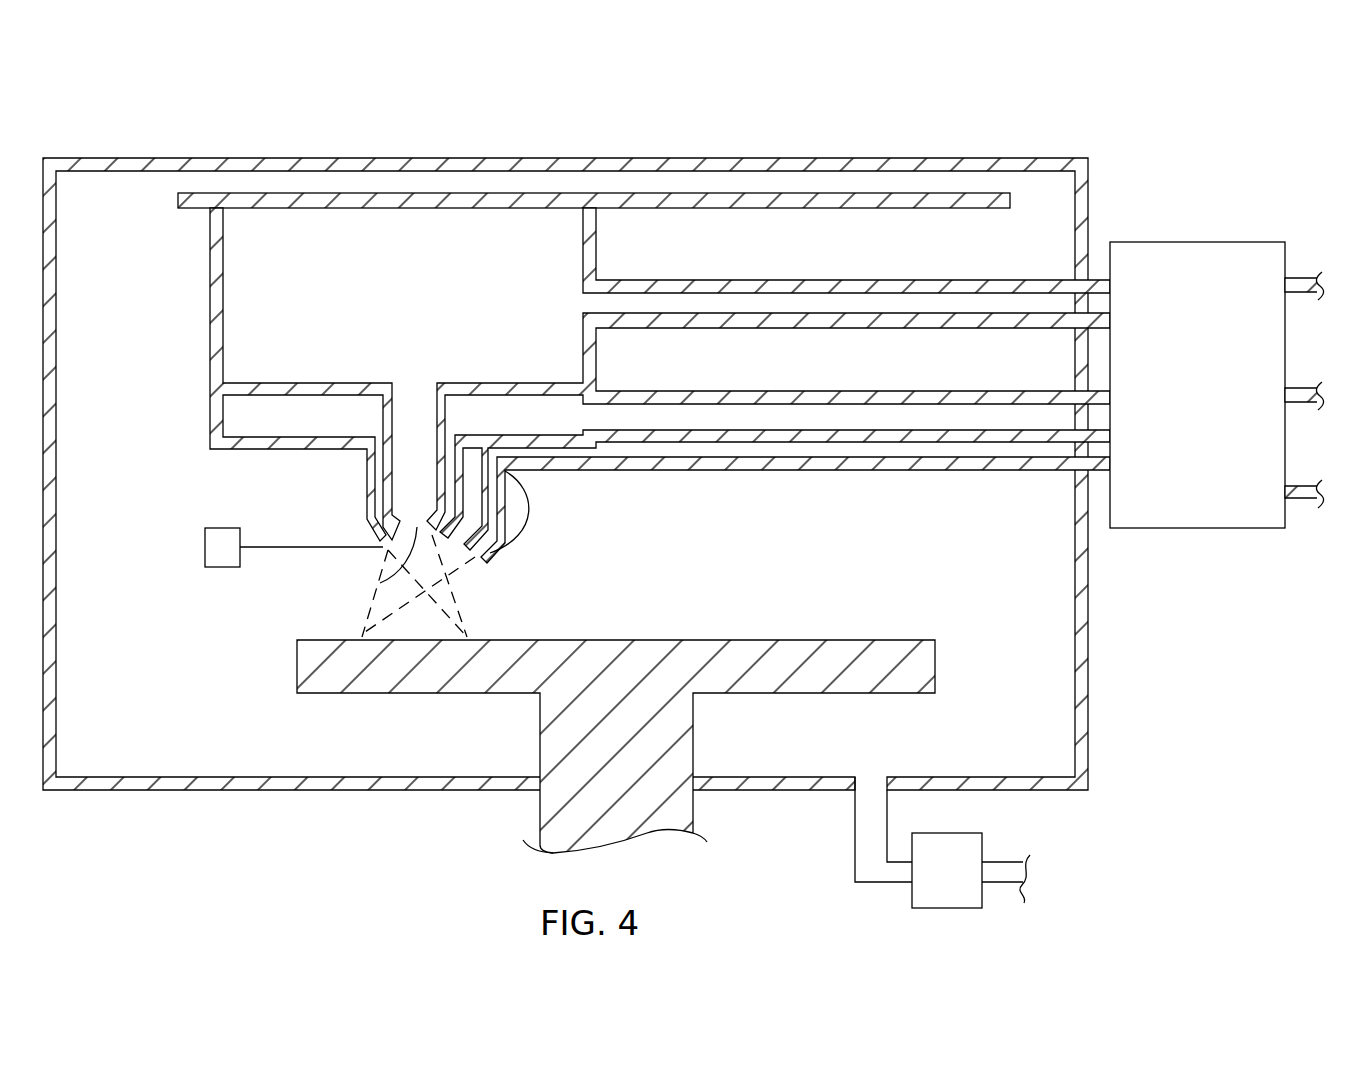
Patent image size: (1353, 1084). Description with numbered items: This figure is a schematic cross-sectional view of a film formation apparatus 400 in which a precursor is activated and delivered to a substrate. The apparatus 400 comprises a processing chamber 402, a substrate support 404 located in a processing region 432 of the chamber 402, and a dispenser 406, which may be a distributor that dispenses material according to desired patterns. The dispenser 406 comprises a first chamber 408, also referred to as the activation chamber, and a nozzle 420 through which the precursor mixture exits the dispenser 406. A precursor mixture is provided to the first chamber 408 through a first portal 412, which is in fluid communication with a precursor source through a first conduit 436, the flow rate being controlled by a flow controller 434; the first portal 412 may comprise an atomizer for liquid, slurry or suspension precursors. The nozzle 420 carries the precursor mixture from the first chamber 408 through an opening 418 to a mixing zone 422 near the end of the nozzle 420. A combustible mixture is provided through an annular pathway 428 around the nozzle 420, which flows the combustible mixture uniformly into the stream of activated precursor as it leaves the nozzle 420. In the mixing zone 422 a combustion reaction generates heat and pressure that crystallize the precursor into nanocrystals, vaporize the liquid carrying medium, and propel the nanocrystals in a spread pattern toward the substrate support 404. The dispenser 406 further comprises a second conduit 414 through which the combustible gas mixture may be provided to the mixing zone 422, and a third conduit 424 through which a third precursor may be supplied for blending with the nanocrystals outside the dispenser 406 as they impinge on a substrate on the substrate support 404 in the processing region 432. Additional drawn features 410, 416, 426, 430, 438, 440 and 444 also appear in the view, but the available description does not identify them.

The apparatus 400 is at (1162, 127).
The processing chamber 402 is at (993, 158).
The substrate support 404 is at (935, 641).
The dispenser 406 is at (210, 273).
The first chamber 408 is at (597, 252).
The gas channel 410 is at (210, 412).
The first portal 412 is at (870, 280).
The second conduit 414 is at (870, 391).
The third gas line 416 is at (890, 470).
The opening 418 is at (410, 395).
The nozzle 420 is at (383, 503).
The mixing zone 422 is at (380, 583).
The third conduit 424 is at (492, 552).
The power source 426 is at (215, 528).
The annular pathway 428 is at (982, 900).
The exhaust conduit 430 is at (855, 848).
The processing region 432 is at (729, 593).
The flow controller 434 is at (1237, 242).
The first conduit 436 is at (1320, 290).
The second gas supply 438 is at (1320, 392).
The third gas supply 440 is at (1320, 492).
The top plate 444 is at (497, 193).